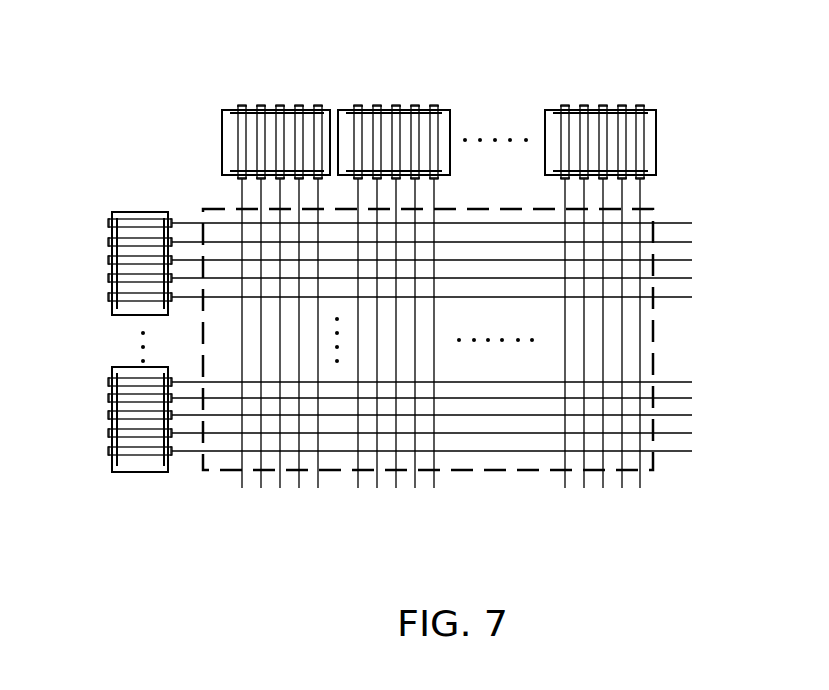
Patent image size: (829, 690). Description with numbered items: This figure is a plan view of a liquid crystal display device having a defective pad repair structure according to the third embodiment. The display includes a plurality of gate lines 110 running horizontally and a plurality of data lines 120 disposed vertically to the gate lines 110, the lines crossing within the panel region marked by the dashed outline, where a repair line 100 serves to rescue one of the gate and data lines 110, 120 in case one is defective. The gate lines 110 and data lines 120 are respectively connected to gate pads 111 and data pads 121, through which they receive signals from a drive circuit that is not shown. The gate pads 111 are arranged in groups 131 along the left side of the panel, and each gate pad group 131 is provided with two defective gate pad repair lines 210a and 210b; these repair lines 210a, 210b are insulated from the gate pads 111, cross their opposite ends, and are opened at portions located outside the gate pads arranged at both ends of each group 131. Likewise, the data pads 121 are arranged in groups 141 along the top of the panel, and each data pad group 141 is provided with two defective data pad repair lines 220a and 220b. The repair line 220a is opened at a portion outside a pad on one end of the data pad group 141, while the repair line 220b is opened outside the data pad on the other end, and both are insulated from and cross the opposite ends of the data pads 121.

The repair line 100 is at (658, 213).
The gate lines 110 is at (702, 227).
The data lines 120 is at (642, 498).
The gate pads 111 is at (94, 252).
The data pads 121 is at (253, 98).
The gate pad group 131 is at (96, 419).
The data pad group 141 is at (436, 76).
The defective gate pad repair line 210a is at (128, 317).
The defective gate pad repair line 210b is at (137, 208).
The defective data pad repair line 220a is at (332, 107).
The defective data pad repair line 220b is at (230, 107).